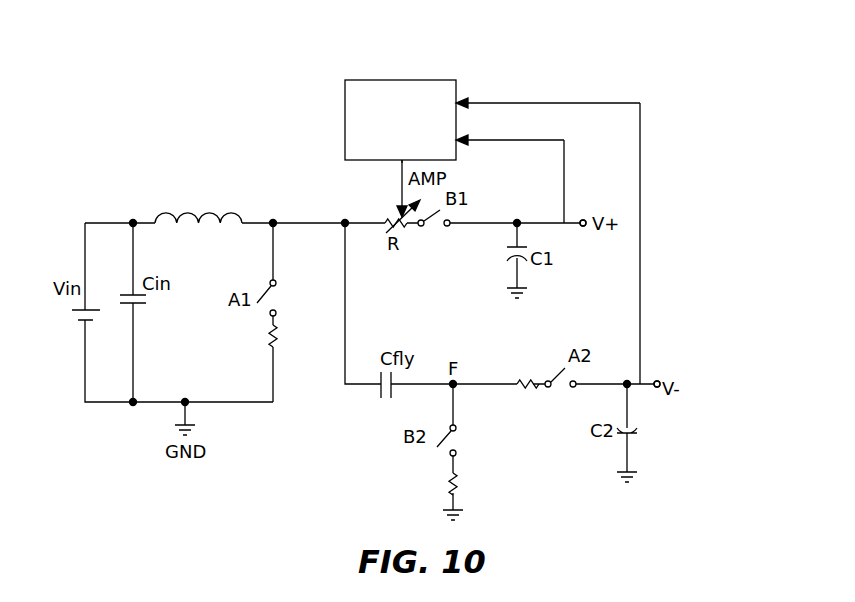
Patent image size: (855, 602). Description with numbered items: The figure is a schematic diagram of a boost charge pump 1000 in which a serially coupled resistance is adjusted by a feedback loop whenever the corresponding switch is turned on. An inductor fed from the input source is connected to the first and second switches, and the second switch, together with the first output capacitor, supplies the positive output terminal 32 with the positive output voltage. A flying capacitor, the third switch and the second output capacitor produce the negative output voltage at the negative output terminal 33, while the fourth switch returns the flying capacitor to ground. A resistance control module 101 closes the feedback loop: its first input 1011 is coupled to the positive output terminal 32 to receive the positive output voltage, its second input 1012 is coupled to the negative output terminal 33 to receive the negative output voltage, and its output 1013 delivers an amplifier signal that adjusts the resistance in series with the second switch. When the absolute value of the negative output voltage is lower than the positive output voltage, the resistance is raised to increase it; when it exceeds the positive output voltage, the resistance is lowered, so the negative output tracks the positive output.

The boost charge pump 1000 is at (699, 84).
The resistance control module 101 is at (410, 80).
The first input 1011 is at (462, 144).
The second input 1012 is at (462, 100).
The output 1013 is at (398, 173).
The positive output terminal 32 is at (576, 229).
The negative output terminal 33 is at (657, 379).